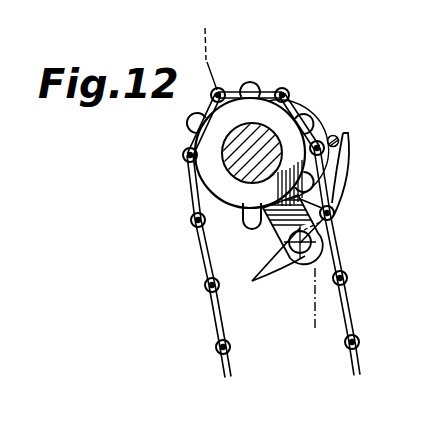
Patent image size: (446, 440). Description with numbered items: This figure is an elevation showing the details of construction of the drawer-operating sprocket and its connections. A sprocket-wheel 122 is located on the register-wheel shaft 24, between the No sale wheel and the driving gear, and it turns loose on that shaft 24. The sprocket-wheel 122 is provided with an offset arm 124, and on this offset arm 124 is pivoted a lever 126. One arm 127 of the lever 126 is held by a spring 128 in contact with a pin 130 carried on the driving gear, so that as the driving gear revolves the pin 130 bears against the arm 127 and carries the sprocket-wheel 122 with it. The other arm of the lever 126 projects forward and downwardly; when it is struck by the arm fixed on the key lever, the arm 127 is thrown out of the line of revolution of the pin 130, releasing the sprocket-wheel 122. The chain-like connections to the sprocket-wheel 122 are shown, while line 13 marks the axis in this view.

The axis line 13 is at (262, 181).
The register-wheel shaft 24 is at (220, 157).
The sprocket-wheel 122 is at (277, 120).
The offset arm 124 is at (333, 231).
The lever 126 is at (333, 194).
The arm 127 is at (340, 177).
The spring 128 is at (342, 212).
The pin 130 is at (339, 136).